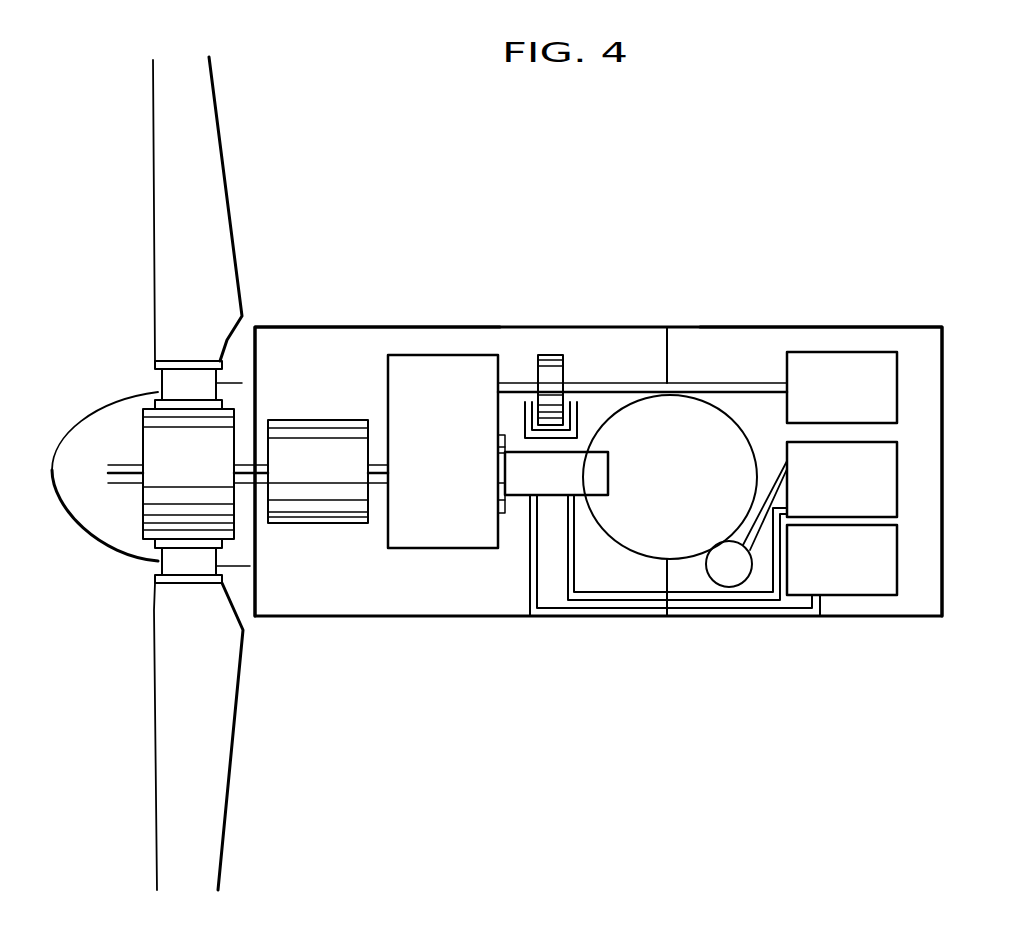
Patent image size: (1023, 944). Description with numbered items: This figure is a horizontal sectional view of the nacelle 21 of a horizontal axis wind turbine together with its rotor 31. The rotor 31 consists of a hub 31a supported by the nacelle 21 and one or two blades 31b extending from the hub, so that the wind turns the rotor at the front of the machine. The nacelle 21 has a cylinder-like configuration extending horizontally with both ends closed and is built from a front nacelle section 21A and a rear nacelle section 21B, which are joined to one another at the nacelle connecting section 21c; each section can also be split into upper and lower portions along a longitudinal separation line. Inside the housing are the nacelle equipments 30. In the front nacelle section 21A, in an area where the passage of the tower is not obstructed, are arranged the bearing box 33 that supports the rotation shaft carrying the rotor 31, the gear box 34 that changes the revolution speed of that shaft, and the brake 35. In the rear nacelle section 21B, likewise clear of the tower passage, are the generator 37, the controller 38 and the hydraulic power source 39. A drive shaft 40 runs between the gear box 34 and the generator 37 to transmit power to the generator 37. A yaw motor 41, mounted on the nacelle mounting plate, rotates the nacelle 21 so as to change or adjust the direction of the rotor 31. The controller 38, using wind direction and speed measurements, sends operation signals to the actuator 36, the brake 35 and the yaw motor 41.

The nacelle 21 is at (508, 310).
The front nacelle section 21A is at (313, 340).
The rear nacelle section 21B is at (780, 342).
The nacelle connecting section 21c is at (667, 348).
The nacelle equipments 30 is at (417, 346).
The rotor 31 is at (151, 473).
The hub 31a is at (145, 540).
The blade 31b is at (160, 245).
The bearing box 33 is at (302, 512).
The gear box 34 is at (462, 360).
The brake 35 is at (567, 362).
The actuator 36 is at (547, 485).
The generator 37 is at (865, 360).
The controller 38 is at (890, 478).
The hydraulic power source 39 is at (872, 583).
The drive shaft 40 is at (637, 382).
The yaw motor 41 is at (729, 578).